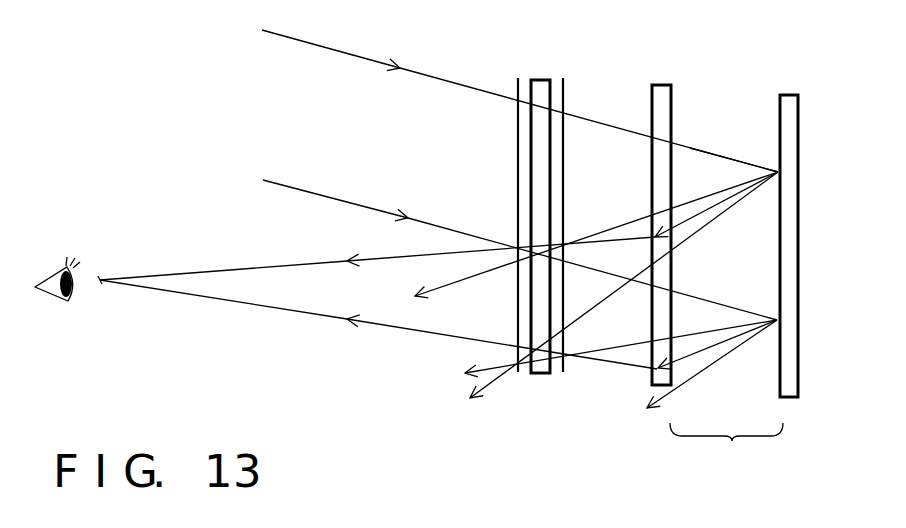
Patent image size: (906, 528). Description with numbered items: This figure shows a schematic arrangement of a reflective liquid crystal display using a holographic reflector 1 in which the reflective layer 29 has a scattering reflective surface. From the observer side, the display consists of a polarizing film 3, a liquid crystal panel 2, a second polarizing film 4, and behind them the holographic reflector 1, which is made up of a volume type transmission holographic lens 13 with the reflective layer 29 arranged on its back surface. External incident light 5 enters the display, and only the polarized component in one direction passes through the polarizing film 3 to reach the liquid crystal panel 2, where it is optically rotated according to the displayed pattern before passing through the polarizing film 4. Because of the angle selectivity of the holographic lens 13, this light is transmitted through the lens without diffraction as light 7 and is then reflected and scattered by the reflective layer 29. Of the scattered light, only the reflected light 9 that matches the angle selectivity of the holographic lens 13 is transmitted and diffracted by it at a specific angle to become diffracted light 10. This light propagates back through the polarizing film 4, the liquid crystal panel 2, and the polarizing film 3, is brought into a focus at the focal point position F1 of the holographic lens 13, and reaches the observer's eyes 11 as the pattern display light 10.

The holographic reflector 1 is at (726, 449).
The liquid crystal panel 2 is at (540, 78).
The polarizing film 3 is at (516, 73).
The polarizing film 4 is at (563, 73).
The incident light 5 is at (262, 30).
The transmitted light 7 is at (708, 151).
The reflected light 9 is at (713, 207).
The diffracted light 10 is at (295, 264).
The observer's eyes 11 is at (55, 303).
The volume type transmission holographic lens 13 is at (660, 83).
The reflective layer 29 is at (789, 93).
The focal point position F1 is at (103, 272).